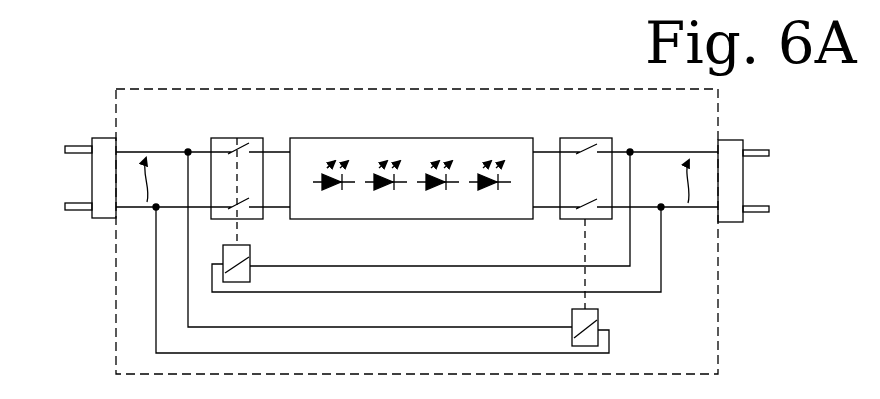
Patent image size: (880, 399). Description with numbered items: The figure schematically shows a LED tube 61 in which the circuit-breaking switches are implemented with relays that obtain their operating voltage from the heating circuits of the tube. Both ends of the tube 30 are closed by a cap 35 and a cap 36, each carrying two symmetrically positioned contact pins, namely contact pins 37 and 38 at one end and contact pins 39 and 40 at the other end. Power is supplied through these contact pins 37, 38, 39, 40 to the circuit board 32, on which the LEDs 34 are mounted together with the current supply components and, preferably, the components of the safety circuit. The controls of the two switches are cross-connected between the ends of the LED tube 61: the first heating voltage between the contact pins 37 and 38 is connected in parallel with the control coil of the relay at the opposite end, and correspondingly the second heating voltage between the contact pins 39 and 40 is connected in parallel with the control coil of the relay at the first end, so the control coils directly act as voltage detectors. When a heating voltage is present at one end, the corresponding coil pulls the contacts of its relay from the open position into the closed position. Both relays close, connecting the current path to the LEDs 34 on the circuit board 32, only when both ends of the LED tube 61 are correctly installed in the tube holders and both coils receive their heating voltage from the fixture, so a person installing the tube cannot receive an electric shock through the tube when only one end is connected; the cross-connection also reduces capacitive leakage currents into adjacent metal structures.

The tube 30 is at (515, 89).
The circuit board 32 is at (490, 221).
The LEDs 34 is at (336, 190).
The cap 35 is at (105, 138).
The cap 36 is at (733, 140).
The contact pin 37 is at (77, 147).
The contact pin 38 is at (77, 211).
The contact pin 39 is at (760, 151).
The contact pin 40 is at (758, 212).
The LED tube 61 is at (452, 70).